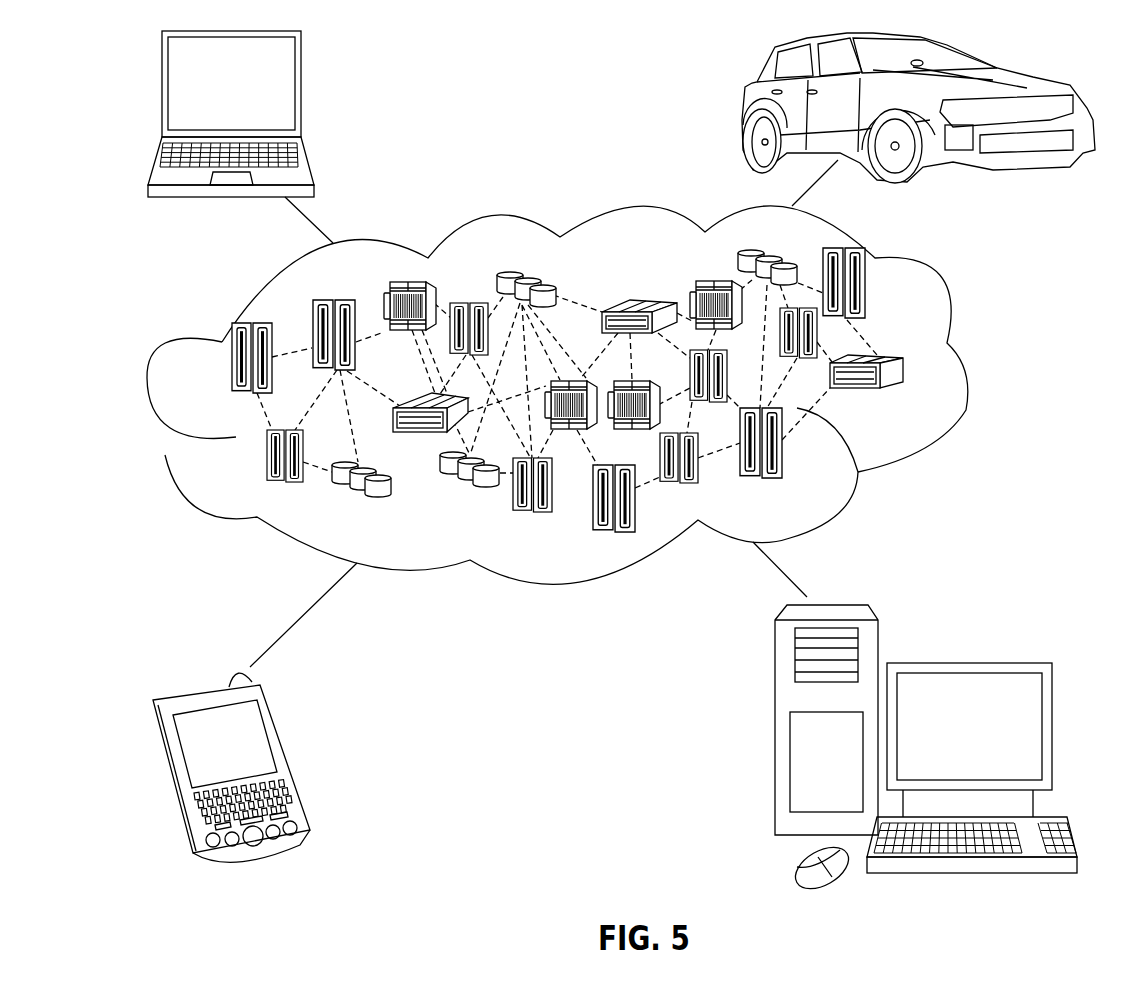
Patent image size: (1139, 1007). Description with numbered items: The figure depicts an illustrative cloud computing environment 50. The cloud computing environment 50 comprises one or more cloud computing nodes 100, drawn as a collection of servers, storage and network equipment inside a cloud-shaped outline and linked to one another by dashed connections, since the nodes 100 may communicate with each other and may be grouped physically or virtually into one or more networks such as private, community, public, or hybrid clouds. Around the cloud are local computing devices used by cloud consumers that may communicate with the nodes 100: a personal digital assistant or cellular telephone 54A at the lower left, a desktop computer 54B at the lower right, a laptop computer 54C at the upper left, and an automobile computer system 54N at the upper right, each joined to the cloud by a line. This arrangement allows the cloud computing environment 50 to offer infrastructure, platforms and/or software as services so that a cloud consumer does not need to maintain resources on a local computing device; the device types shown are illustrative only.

The cloud computing environment 50 is at (968, 368).
The cloud computing nodes 100 is at (918, 403).
The personal digital assistant or cellular telephone 54A is at (292, 758).
The desktop computer 54B is at (967, 662).
The laptop computer 54C is at (302, 92).
The automobile computer system 54N is at (742, 108).